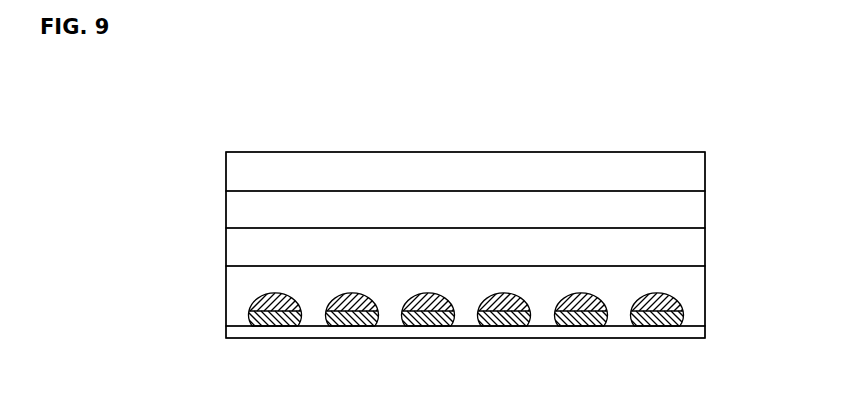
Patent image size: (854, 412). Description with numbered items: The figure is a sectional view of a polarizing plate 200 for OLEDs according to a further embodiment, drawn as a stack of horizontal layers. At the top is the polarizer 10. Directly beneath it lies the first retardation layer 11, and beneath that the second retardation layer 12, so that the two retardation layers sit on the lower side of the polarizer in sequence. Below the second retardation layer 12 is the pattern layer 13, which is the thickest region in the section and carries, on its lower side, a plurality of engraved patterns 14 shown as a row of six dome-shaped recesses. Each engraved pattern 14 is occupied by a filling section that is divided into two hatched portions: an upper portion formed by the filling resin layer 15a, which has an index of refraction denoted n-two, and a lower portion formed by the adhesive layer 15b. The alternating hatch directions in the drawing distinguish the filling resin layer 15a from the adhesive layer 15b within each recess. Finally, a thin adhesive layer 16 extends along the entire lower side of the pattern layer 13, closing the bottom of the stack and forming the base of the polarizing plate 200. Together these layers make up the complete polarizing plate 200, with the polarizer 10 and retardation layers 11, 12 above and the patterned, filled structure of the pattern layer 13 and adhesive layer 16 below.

The polarizing plate 200 is at (678, 128).
The polarizer 10 is at (243, 174).
The first retardation layer 11 is at (243, 211).
The second retardation layer 12 is at (243, 248).
The pattern layer 13 is at (243, 288).
The adhesive layer 16 is at (243, 332).
The engraved patterns 14 is at (278, 294).
The filling resin layer 15a is at (502, 302).
The adhesive layer 15b is at (424, 318).